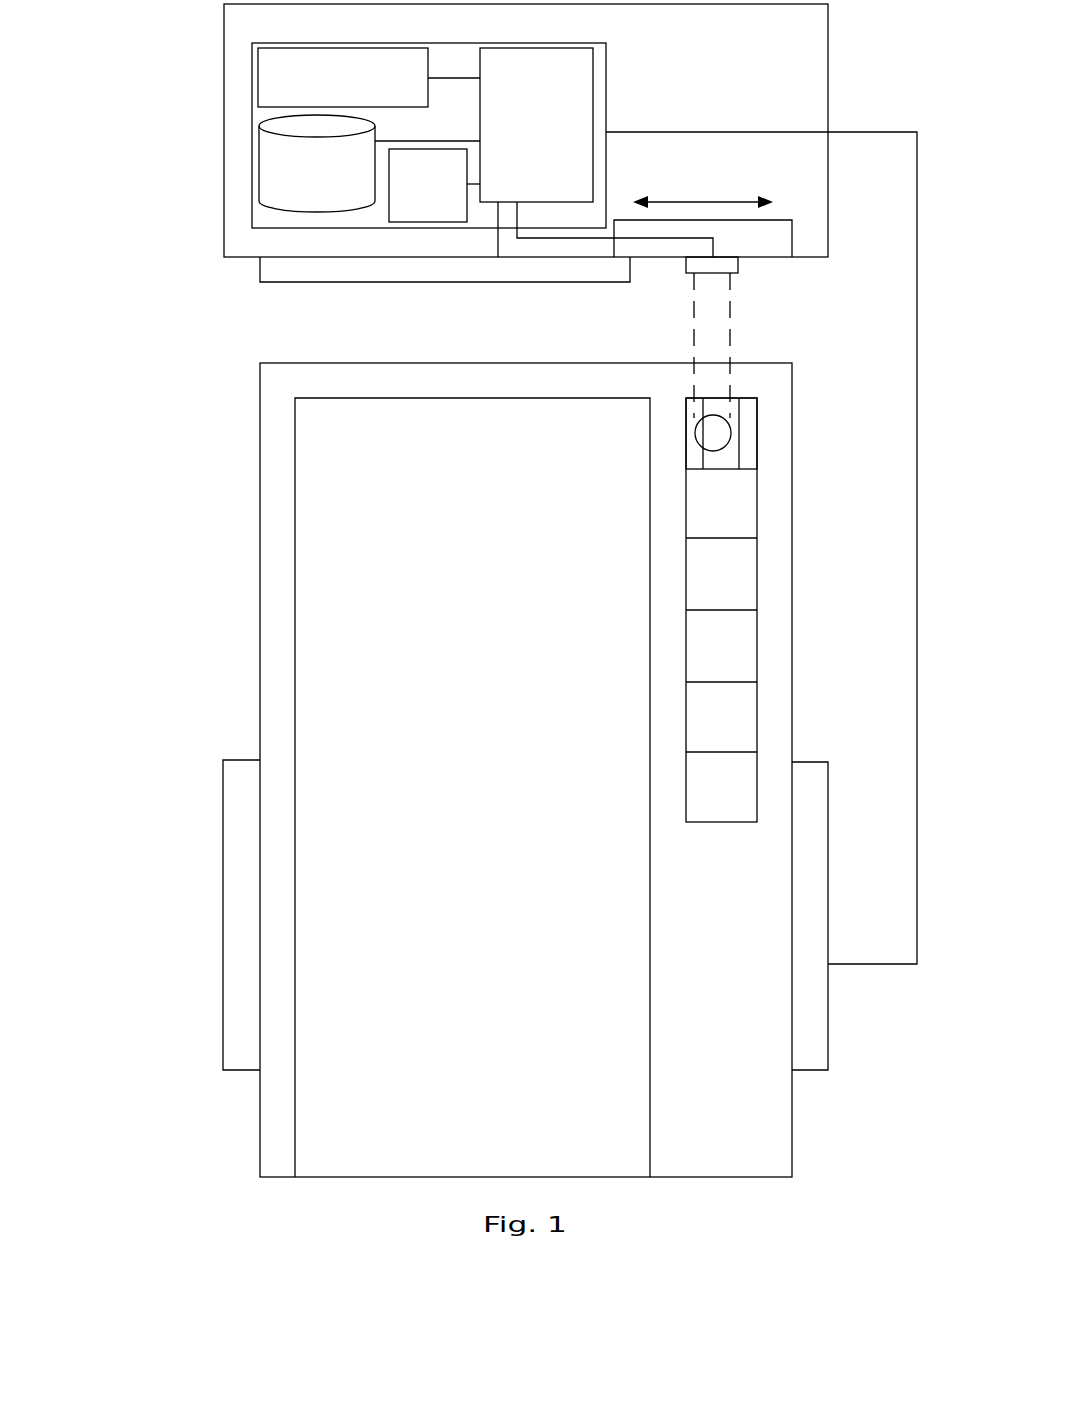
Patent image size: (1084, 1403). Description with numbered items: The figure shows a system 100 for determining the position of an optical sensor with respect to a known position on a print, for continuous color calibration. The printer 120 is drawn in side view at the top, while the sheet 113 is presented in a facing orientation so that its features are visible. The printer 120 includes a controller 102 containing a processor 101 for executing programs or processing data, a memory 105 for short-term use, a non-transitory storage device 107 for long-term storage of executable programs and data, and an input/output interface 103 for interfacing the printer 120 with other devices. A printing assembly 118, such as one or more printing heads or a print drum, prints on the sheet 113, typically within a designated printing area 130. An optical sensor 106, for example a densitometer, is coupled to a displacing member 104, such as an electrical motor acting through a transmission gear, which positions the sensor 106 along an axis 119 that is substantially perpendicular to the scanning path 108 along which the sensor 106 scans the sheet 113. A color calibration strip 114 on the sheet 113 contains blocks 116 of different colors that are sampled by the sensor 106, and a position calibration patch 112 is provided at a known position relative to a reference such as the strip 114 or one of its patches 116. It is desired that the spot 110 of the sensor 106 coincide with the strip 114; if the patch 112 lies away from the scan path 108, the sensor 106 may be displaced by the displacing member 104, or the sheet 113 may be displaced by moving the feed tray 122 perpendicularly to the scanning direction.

The system 100 is at (175, 309).
The processor 101 is at (555, 151).
The controller 102 is at (606, 107).
The input/output (I/O) interface 103 is at (364, 104).
The displacing member 104 is at (785, 220).
The memory 105 is at (448, 207).
The optical sensor 106 is at (686, 263).
The non-transitory storage device 107 is at (337, 191).
The scanning path 108 is at (731, 317).
The spot 110 is at (722, 448).
The position calibration patch 112 is at (757, 432).
The sheet 113 is at (260, 610).
The color calibration strip 114 is at (666, 655).
The blocks 116 is at (757, 505).
The printing assembly 118 is at (490, 285).
The axis 119 is at (690, 202).
The printer 120 is at (828, 115).
The feed tray 122 is at (223, 823).
The designated printing area 130 is at (650, 929).